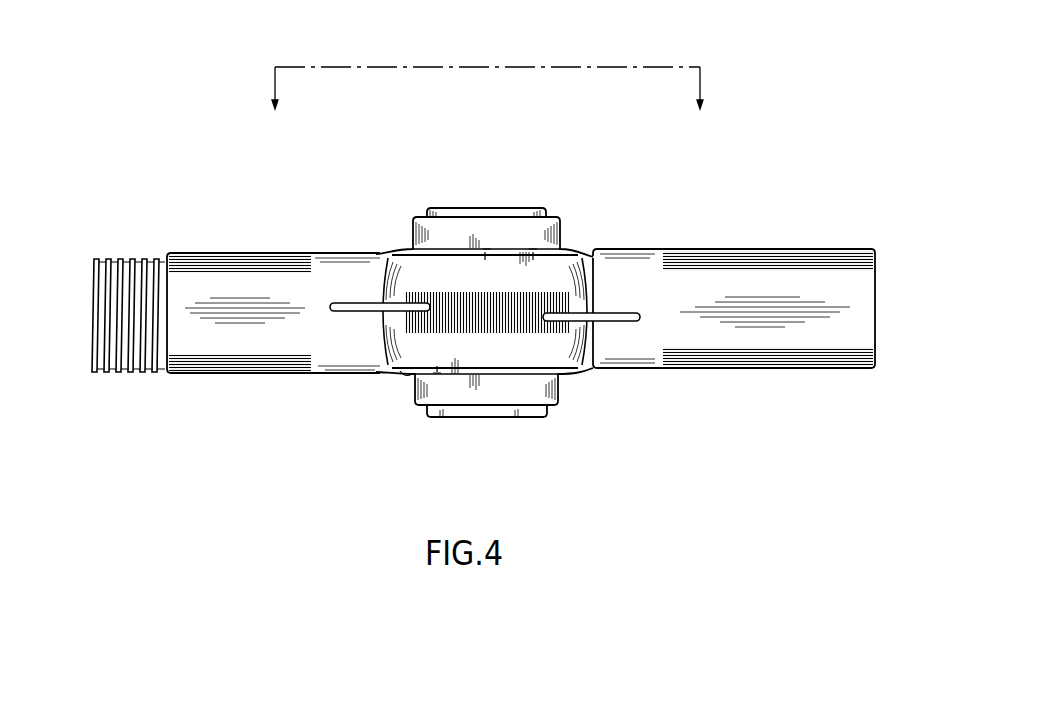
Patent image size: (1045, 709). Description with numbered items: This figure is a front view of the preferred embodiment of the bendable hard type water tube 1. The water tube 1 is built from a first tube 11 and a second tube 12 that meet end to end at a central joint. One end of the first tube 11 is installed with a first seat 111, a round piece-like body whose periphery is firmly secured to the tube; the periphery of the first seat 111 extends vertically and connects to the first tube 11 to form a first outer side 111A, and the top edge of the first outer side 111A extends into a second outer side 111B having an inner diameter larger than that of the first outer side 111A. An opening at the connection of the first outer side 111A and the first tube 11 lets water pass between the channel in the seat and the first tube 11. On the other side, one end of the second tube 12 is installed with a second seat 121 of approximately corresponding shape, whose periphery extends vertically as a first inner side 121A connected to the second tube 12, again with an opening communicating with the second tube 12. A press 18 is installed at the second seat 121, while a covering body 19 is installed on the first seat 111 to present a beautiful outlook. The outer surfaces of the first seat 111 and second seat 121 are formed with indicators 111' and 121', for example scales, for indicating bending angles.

The bendable hard type water tube 1 is at (489, 68).
The first tube 11 is at (315, 257).
The second tube 12 is at (738, 333).
The first seat 111 is at (469, 204).
The indicators 111' is at (510, 191).
The first outer side 111A is at (537, 272).
The second outer side 111B is at (557, 300).
The second seat 121 is at (508, 399).
The indicators 121' is at (364, 403).
The first inner side 121A is at (482, 347).
The press 18 is at (513, 414).
The covering body 19 is at (475, 207).